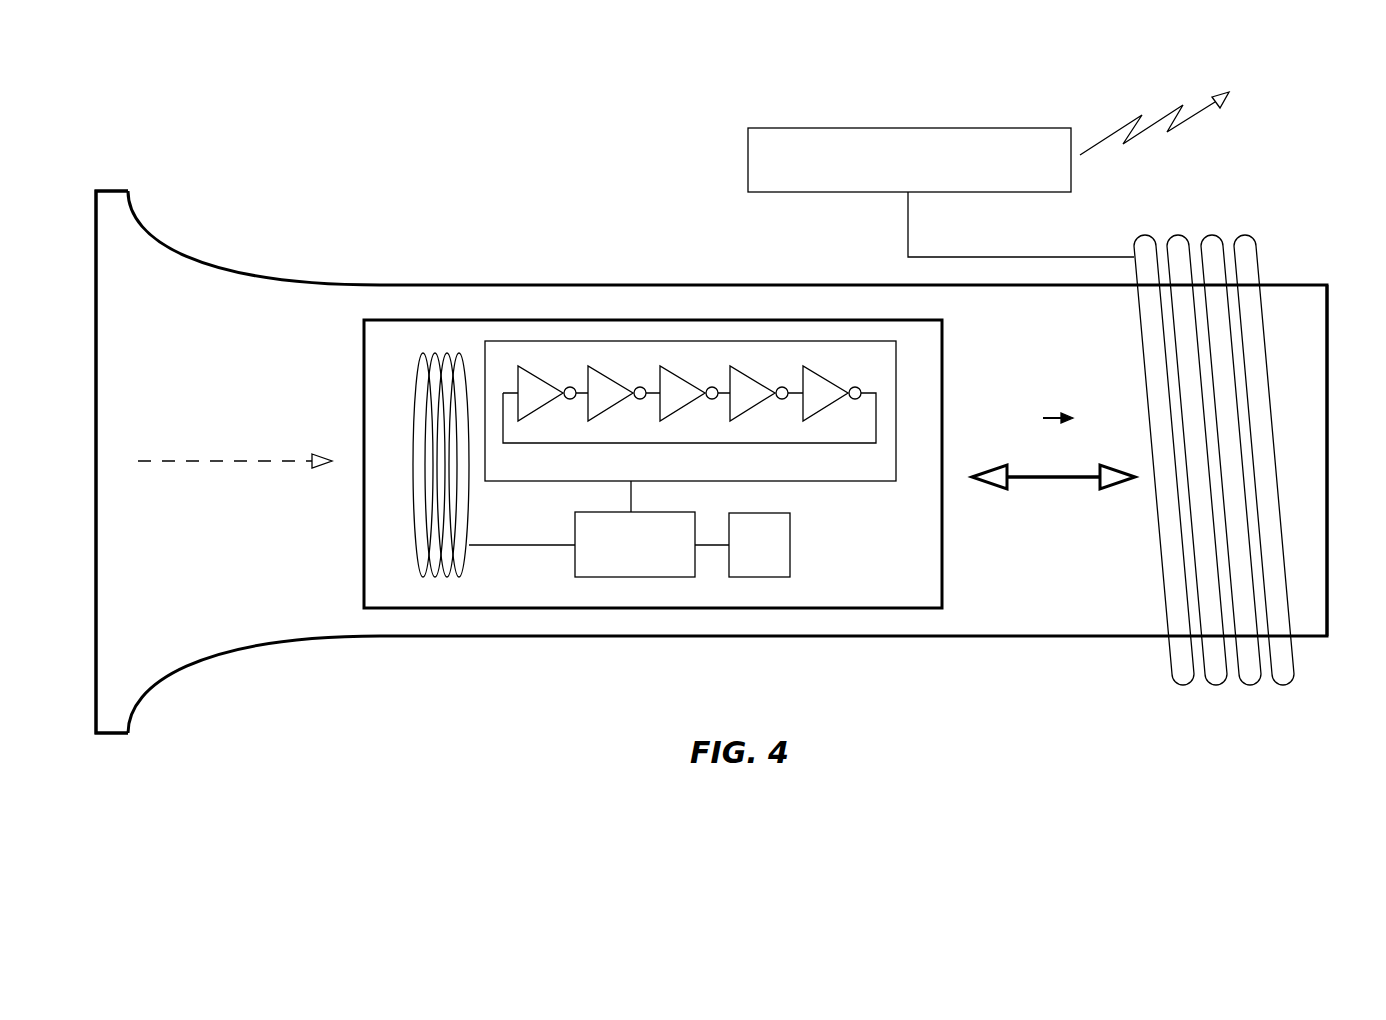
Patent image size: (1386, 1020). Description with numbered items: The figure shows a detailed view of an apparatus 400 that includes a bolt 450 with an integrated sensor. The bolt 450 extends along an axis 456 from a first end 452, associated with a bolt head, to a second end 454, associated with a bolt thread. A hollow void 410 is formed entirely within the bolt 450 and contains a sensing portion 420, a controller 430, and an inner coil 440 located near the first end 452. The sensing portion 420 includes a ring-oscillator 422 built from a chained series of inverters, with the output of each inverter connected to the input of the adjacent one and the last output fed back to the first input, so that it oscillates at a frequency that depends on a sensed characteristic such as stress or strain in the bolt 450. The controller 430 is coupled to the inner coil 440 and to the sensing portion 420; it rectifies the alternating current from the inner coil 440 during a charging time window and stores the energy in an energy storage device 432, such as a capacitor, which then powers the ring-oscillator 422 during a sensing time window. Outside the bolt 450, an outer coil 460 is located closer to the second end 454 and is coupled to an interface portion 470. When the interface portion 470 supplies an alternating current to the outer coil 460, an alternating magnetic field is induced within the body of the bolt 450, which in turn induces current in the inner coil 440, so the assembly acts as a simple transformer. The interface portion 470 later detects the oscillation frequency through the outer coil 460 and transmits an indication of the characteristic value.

The apparatus 400 is at (542, 200).
The hollow void 410 is at (653, 464).
The sensing portion 420 is at (690, 426).
The ring-oscillator 422 is at (830, 378).
The controller 430 is at (652, 544).
The energy storage device 432 is at (759, 545).
The inner coil 440 is at (413, 407).
The bolt 450 is at (1053, 416).
The first end 452 is at (93, 167).
The second end 454 is at (1330, 337).
The axis 456 is at (208, 460).
The outer coil 460 is at (1244, 235).
The interface portion 470 is at (1046, 156).